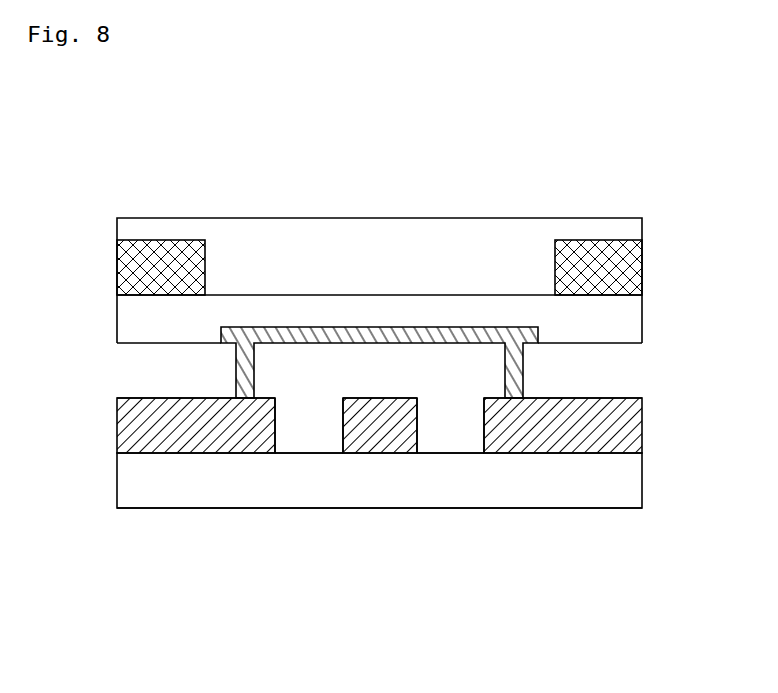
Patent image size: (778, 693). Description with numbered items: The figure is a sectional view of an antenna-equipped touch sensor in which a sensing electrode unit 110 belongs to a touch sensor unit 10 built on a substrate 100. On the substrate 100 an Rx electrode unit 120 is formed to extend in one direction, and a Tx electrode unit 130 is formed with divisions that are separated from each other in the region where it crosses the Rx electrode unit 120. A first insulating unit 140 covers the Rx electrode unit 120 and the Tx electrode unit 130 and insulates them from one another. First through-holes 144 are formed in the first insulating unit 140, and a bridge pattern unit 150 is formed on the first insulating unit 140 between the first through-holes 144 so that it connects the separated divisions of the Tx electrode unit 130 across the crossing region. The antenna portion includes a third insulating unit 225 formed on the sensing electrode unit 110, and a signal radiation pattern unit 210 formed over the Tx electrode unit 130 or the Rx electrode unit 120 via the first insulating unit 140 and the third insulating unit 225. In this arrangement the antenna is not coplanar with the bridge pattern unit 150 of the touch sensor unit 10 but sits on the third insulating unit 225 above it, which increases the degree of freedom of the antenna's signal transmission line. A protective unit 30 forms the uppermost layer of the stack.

The touch sensor unit 10 is at (377, 628).
The protective unit 30 is at (616, 227).
The substrate 100 is at (568, 493).
The sensing electrode unit 110 is at (488, 580).
The Rx electrode unit 120 is at (371, 438).
The Tx electrode unit 130 is at (500, 437).
The first insulating unit 140 is at (442, 432).
The first through-hole 144 is at (245, 381).
The bridge pattern unit 150 is at (302, 343).
The signal radiation pattern unit 210 is at (182, 253).
The third insulating unit 225 is at (337, 306).